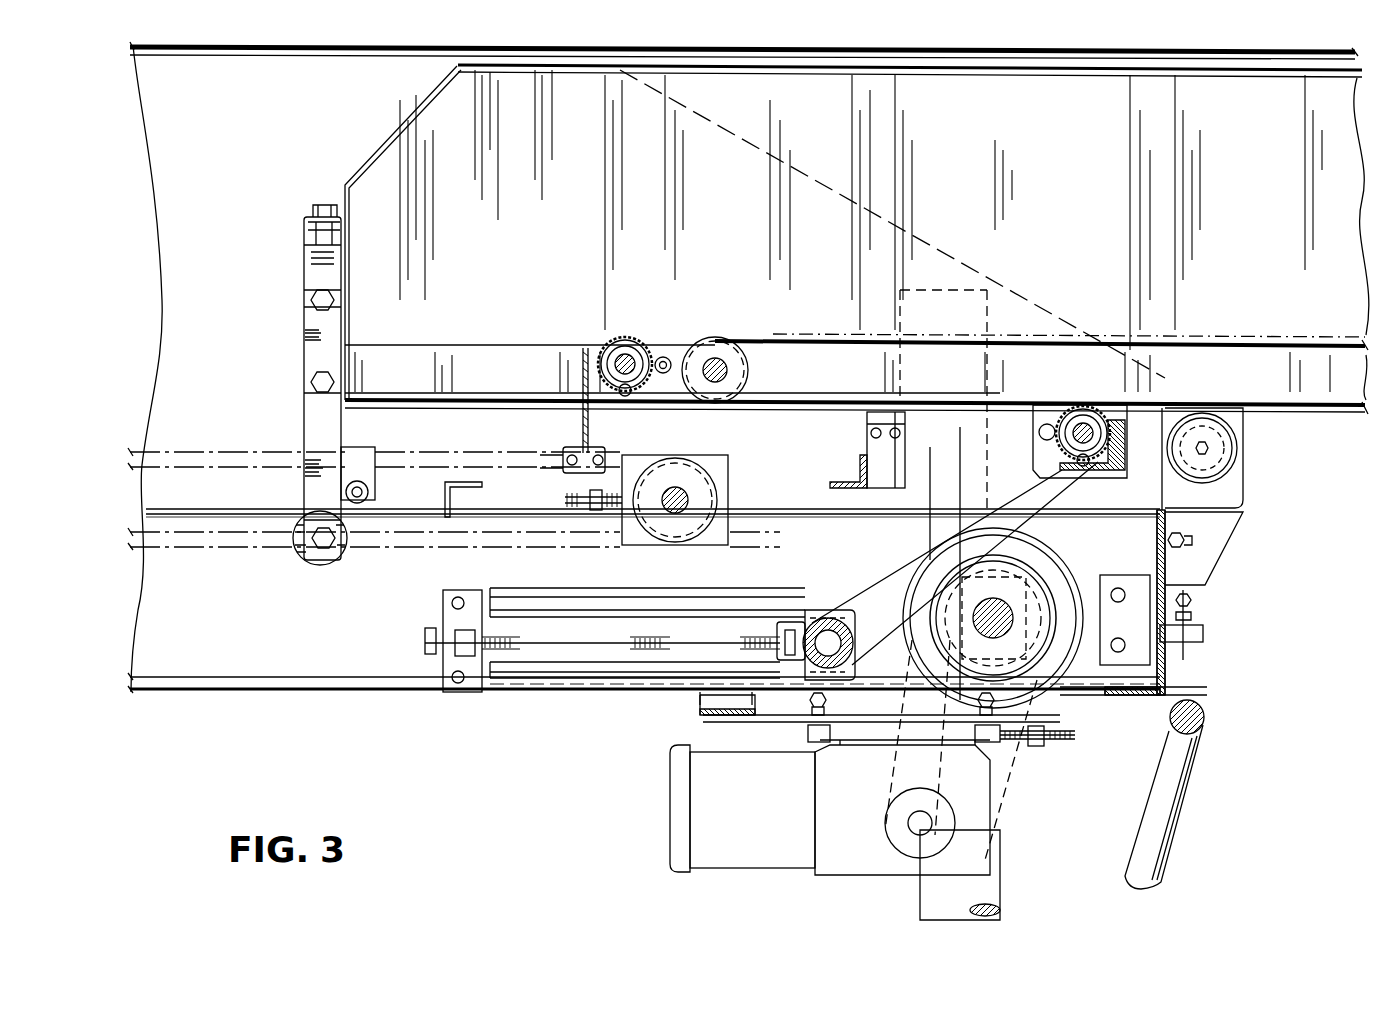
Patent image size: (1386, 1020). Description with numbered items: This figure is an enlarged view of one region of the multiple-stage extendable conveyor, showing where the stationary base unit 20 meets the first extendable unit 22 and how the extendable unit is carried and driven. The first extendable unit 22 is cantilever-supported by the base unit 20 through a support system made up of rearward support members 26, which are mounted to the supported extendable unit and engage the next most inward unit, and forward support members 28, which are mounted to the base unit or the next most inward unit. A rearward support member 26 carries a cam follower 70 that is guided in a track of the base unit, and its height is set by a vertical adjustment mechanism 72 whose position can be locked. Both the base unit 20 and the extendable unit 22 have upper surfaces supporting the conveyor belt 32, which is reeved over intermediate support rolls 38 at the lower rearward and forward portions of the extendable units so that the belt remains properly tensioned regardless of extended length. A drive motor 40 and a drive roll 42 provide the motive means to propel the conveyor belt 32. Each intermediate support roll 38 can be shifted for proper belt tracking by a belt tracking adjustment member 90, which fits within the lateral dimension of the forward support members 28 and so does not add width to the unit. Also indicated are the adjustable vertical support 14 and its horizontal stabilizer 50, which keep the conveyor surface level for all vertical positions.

The adjustable vertical support 14 is at (1005, 885).
The stationary base unit 20 is at (333, 692).
The first extendable unit 22 is at (1303, 412).
The rearward support member 26 is at (304, 295).
The forward support member 28 is at (1240, 480).
The conveyor belt 32 is at (1033, 500).
The intermediate support roll 38 is at (608, 340).
The drive motor 40 is at (680, 810).
The drive roll 42 is at (1040, 660).
The horizontal stabilizer 50 is at (1185, 797).
The cam follower 70 is at (320, 566).
The vertical adjustment mechanism 72 is at (323, 205).
The belt tracking adjustment member 90 is at (650, 335).